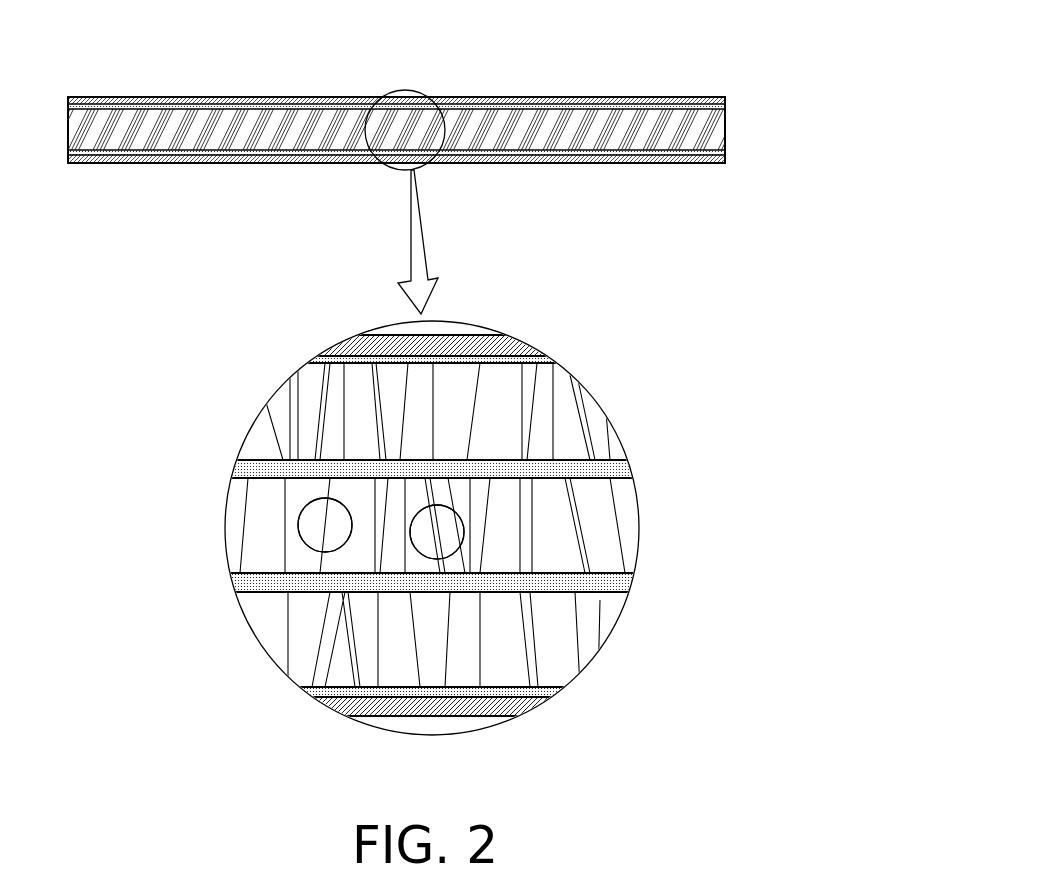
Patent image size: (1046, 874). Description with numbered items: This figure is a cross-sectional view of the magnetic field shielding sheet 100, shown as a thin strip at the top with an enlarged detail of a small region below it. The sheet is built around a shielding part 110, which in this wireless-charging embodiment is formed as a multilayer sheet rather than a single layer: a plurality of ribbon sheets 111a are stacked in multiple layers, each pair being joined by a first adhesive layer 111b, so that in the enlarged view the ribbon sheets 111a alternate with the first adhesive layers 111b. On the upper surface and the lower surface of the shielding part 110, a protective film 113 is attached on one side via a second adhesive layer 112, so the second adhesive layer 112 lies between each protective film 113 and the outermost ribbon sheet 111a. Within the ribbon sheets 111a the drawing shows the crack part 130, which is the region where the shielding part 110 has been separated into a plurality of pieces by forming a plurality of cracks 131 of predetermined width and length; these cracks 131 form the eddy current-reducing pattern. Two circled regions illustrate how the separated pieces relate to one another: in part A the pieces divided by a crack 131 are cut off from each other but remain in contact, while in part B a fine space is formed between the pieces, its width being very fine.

The magnetic field shielding sheet 100 is at (416, 37).
The shielding part 110 is at (716, 130).
The ribbon sheet 111a is at (592, 430).
The first adhesive layer 111b is at (625, 470).
The second adhesive layer 112 is at (725, 106).
The protective film 113 is at (725, 98).
The crack part 130 is at (228, 437).
The crack 131 is at (430, 520).
The part A is at (300, 543).
The part B is at (425, 545).